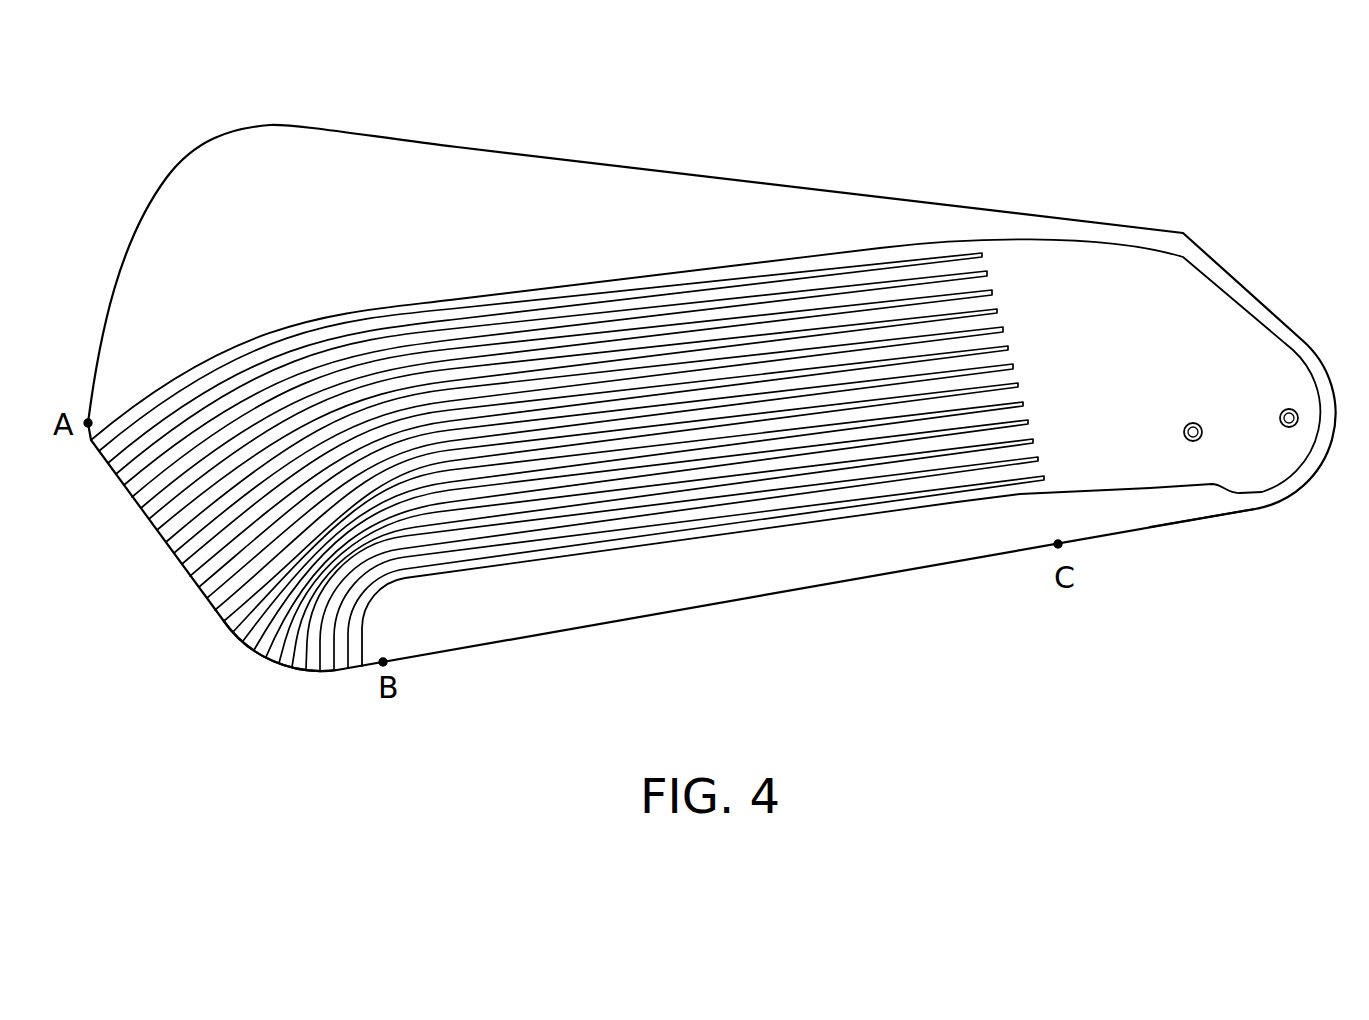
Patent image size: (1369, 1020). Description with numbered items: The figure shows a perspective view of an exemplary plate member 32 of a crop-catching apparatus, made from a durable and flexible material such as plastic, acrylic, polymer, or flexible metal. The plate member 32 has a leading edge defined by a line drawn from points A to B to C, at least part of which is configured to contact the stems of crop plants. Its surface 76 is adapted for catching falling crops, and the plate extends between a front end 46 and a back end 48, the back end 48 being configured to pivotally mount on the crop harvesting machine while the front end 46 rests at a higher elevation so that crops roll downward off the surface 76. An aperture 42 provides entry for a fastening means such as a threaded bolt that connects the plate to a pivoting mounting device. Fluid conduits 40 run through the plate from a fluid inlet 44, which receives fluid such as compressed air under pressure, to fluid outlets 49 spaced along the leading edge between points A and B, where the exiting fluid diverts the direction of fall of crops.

The surface 76 is at (248, 173).
The plate member 32 is at (683, 673).
The fluid conduits 40 is at (571, 505).
The fluid outlets 49 is at (352, 670).
The front end 46 is at (246, 678).
The back end 48 is at (1240, 540).
The fluid inlet 44 is at (1193, 441).
The aperture 42 is at (1290, 427).